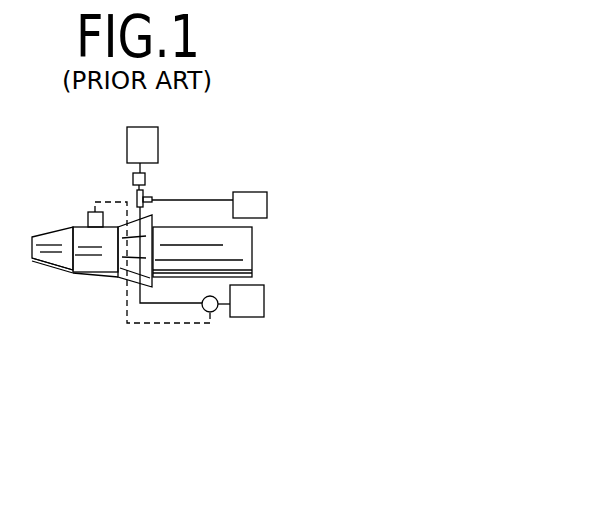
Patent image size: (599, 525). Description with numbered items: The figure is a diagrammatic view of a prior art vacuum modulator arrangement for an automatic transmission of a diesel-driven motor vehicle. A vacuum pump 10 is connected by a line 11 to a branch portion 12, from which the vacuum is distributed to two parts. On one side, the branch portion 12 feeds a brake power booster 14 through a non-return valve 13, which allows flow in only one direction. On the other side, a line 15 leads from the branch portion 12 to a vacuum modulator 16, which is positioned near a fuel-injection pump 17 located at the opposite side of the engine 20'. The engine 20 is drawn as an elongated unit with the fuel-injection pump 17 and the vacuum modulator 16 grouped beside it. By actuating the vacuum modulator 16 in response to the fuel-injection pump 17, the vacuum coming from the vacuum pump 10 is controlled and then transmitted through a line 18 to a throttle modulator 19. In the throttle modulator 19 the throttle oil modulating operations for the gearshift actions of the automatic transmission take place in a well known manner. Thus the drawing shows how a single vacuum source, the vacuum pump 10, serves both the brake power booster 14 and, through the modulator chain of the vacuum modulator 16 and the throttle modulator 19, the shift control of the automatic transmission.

The vacuum pump 10 is at (257, 205).
The line 11 is at (205, 200).
The branch portion 12 is at (134, 192).
The non-return valve 13 is at (145, 178).
The brake power booster 14 is at (150, 140).
The line 15 is at (167, 303).
The vacuum modulator 16 is at (215, 312).
The fuel-injection pump 17 is at (258, 300).
The line 18 is at (192, 325).
The throttle modulator 19 is at (88, 217).
The gas turbine engine 20 is at (92, 273).
The engine 20' is at (245, 252).